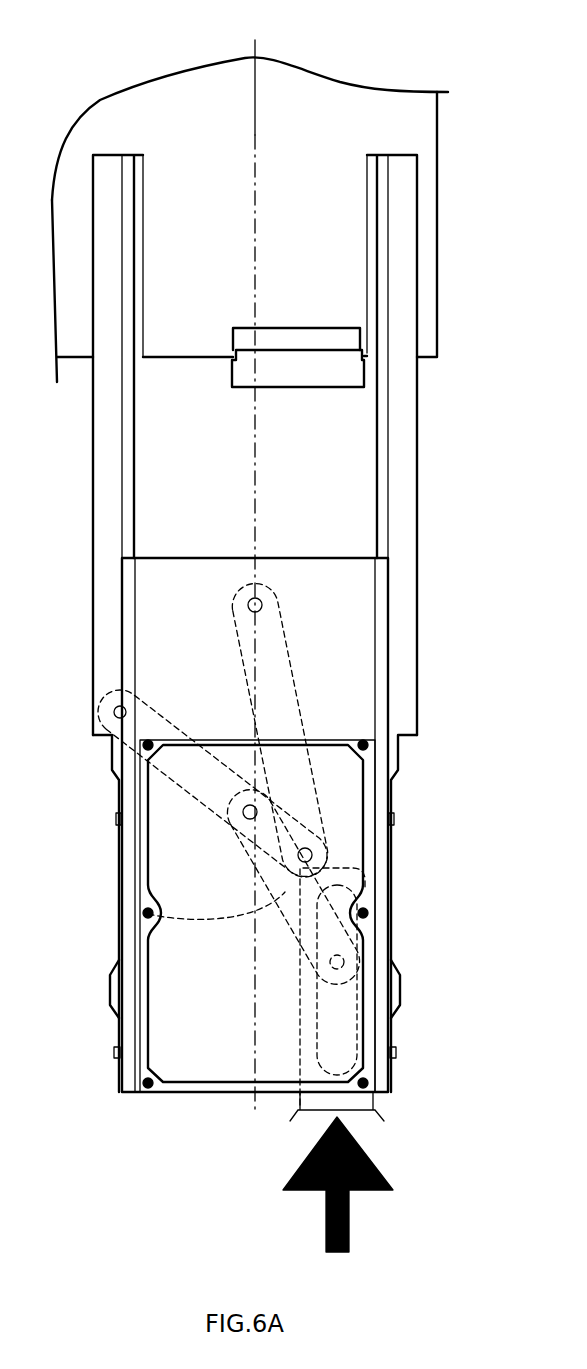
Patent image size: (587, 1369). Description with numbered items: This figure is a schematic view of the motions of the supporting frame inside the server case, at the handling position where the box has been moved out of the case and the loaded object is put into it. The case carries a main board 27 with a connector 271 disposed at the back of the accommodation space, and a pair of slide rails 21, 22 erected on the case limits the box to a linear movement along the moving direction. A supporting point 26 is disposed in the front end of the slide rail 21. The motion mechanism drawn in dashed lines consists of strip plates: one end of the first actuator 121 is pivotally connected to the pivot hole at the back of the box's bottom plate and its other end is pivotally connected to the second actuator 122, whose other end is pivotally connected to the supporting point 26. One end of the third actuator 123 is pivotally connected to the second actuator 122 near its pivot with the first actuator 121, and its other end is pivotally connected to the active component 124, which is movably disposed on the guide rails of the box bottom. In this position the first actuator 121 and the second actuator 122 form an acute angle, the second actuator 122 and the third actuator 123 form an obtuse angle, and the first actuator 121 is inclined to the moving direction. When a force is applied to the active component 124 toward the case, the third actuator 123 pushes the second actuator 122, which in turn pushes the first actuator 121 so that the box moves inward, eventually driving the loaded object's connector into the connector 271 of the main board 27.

The main board 27 is at (340, 108).
The connector 271 is at (336, 368).
The slide rail 21 is at (110, 452).
The slide rail 22 is at (390, 462).
The supporting point 26 is at (108, 712).
The first actuator 121 is at (285, 712).
The second actuator 122 is at (212, 792).
The third actuator 123 is at (148, 918).
The active component 124 is at (345, 998).